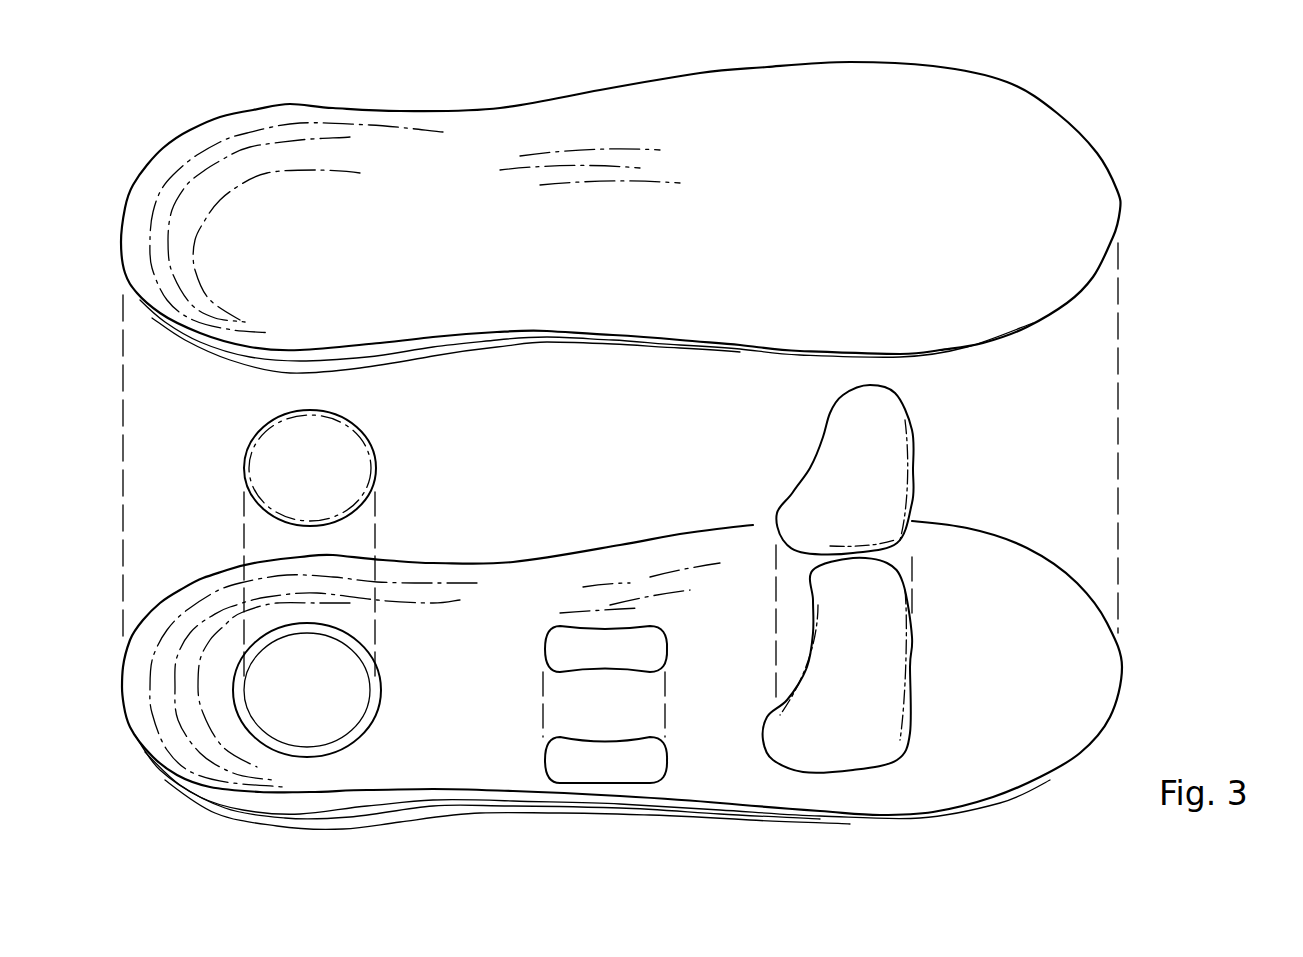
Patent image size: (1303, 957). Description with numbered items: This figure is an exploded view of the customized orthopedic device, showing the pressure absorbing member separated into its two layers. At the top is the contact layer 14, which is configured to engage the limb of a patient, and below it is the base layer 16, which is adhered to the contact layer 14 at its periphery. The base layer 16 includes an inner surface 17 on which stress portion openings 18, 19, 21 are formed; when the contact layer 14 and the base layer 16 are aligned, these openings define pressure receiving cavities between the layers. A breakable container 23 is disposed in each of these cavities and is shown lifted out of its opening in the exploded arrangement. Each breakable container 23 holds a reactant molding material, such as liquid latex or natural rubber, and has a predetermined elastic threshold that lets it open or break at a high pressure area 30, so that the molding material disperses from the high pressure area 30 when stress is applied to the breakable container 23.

The contact layer 14 is at (233, 112).
The base layer 16 is at (360, 807).
The inner surface 17 is at (512, 623).
The stress portion opening 18 is at (838, 659).
The stress portion opening 19 is at (605, 727).
The stress portion opening 21 is at (307, 624).
The breakable container 23 is at (579, 528).
The high pressure area 30 is at (609, 527).